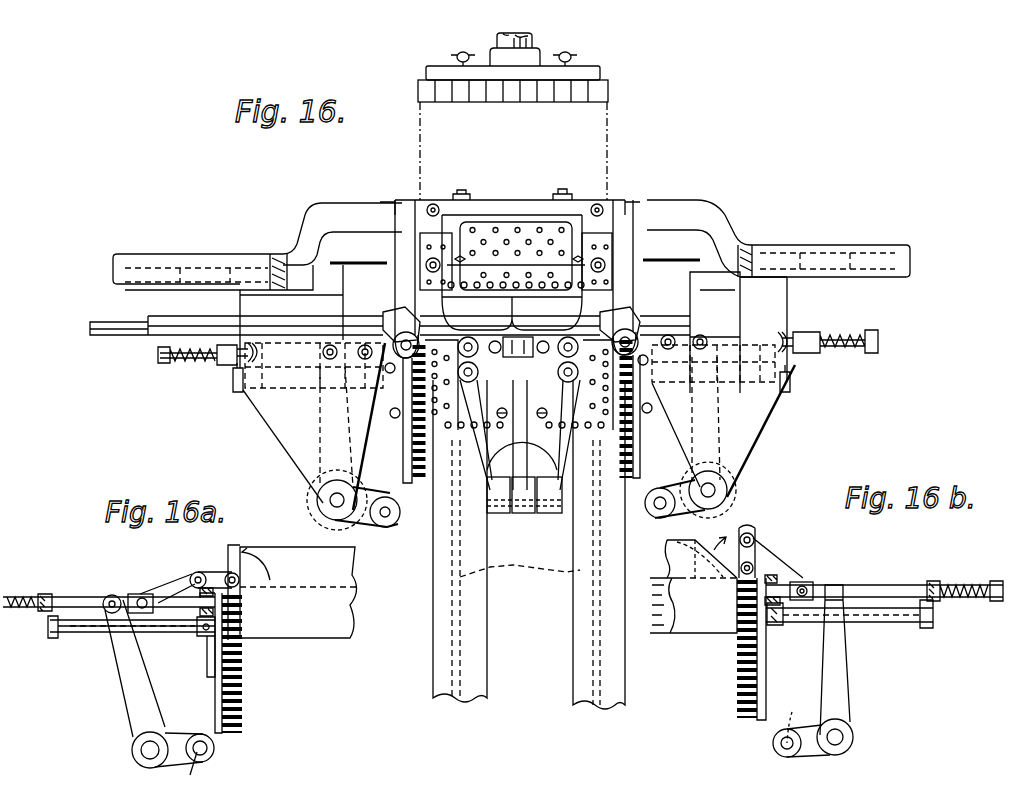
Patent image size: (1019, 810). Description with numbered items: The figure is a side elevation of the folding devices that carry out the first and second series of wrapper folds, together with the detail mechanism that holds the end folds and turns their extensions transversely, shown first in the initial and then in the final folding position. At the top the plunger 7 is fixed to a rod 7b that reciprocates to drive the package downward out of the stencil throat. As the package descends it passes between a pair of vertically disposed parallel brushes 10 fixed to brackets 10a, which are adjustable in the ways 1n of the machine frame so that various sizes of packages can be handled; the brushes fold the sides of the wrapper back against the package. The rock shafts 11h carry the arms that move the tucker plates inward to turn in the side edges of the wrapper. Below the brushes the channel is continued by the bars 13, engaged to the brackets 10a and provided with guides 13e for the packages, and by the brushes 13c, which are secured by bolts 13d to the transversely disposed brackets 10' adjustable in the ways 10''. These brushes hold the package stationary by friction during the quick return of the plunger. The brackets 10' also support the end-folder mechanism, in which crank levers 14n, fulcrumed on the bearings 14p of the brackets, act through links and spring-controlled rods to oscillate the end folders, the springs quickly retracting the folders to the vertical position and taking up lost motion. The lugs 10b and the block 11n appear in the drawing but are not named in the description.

In FIG. 16, the plunger 7 is at (602, 88).
In FIG. 16, the rod 7b is at (530, 44).
In FIG. 16, the brushes 10 is at (516, 216).
In FIG. 16, the brackets 10a is at (516, 215).
In FIG. 16, the plate lugs 10b is at (585, 162).
In FIG. 16, the brackets 10' is at (519, 436).
In FIG. 16, the ways 10'' is at (505, 258).
In FIG. 16, the ways 1n is at (622, 180).
In FIG. 16, the rock shafts 11h is at (180, 330).
In FIG. 16, the block 11n is at (737, 315).
In FIG. 16, the bars 13 is at (573, 630).
In FIG. 16, the brushes 13c is at (652, 466).
In FIG. 16A, the brushes 13c is at (216, 663).
In FIG. 16B, the brushes 13c is at (766, 678).
In FIG. 16A, the bolts 13d is at (75, 637).
In FIG. 16B, the bolts 13d is at (898, 622).
In FIG. 16, the guides 13e is at (520, 559).
In FIG. 16, the crank levers 14n is at (362, 522).
In FIG. 16A, the crank levers 14n is at (130, 707).
In FIG. 16B, the crank levers 14n is at (847, 707).
In FIG. 16, the bearings 14p is at (745, 500).